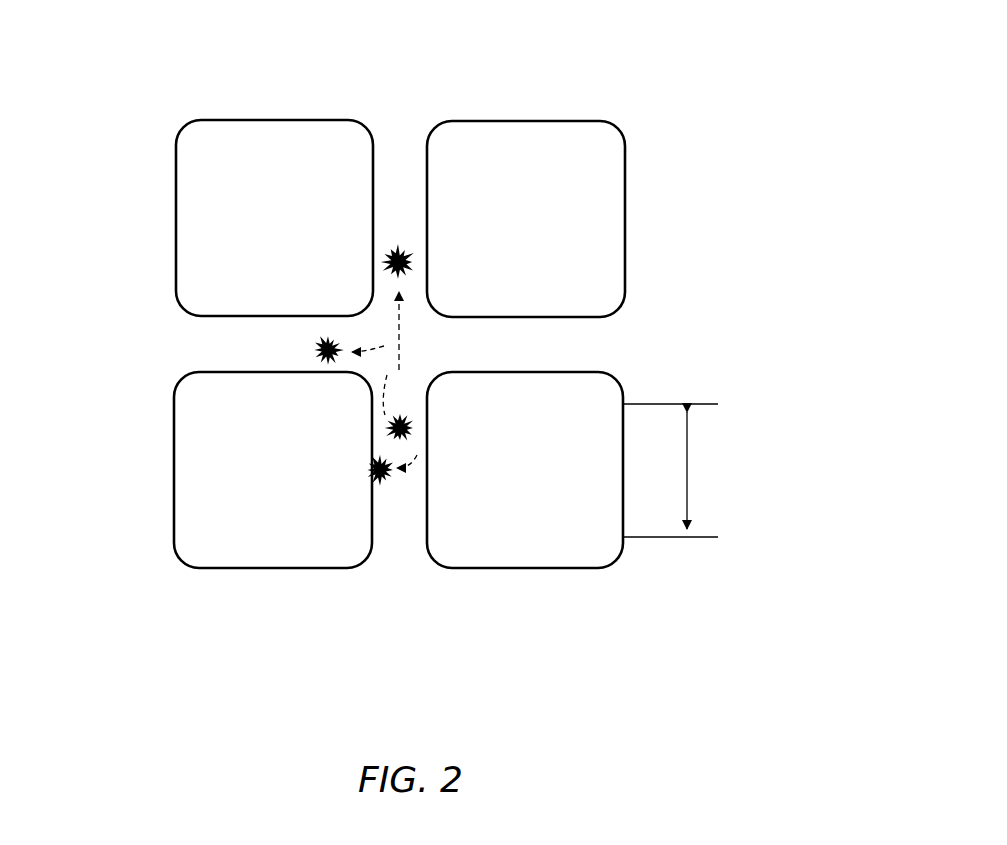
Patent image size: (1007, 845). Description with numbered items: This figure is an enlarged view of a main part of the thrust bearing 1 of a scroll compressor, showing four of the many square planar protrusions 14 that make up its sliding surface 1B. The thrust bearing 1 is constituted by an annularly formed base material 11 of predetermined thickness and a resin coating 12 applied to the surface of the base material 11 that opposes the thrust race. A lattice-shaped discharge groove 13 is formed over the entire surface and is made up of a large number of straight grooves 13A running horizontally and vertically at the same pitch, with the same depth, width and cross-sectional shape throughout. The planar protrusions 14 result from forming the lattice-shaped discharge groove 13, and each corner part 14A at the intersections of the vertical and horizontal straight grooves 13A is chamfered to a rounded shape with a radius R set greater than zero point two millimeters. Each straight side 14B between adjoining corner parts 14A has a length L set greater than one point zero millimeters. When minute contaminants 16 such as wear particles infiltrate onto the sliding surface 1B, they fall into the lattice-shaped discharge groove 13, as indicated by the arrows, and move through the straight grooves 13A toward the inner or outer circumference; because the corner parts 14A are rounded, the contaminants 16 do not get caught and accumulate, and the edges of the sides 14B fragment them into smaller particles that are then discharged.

The thrust bearing 1 is at (676, 129).
The sliding surface 1B is at (556, 130).
The base material 11 is at (678, 221).
The resin coating 12 is at (628, 258).
The lattice-shaped discharge groove 13 is at (413, 124).
The straight groove 13A is at (210, 348).
The planar protrusion 14 is at (262, 132).
The corner part 14A is at (185, 125).
The side 14B is at (285, 118).
The contaminants 16 is at (400, 245).
The radius R is at (623, 376).
The length L is at (670, 470).